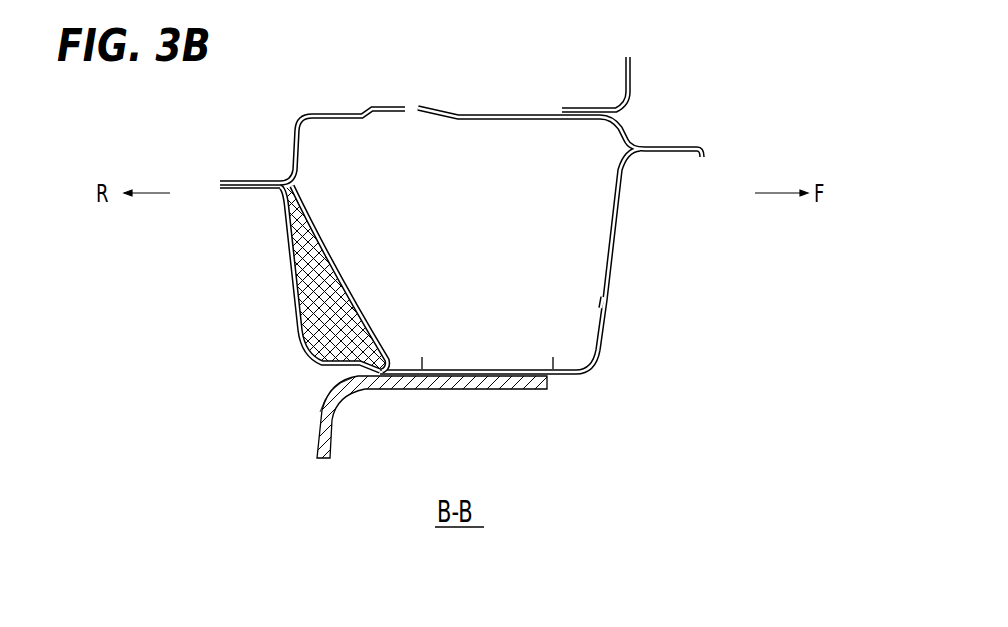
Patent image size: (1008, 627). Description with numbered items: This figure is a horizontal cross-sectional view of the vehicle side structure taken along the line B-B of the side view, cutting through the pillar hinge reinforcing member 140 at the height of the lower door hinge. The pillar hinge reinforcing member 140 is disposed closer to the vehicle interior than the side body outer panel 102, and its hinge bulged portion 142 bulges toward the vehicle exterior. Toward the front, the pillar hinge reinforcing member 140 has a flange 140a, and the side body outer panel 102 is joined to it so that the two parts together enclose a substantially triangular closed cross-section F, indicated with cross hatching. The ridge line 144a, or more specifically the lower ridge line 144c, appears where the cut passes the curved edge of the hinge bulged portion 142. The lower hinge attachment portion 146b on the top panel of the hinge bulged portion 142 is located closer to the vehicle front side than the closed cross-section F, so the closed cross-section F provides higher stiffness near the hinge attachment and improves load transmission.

The pillar hinge reinforcing member 140 is at (622, 234).
The flange 140a is at (272, 189).
The side body outer panel 102 is at (354, 279).
The ridge line 144a is at (388, 362).
The lower ridge line 144c is at (393, 278).
The lower hinge attachment portion 146b is at (484, 372).
The hinge bulged portion 142 is at (585, 380).
The closed cross-section F is at (301, 332).